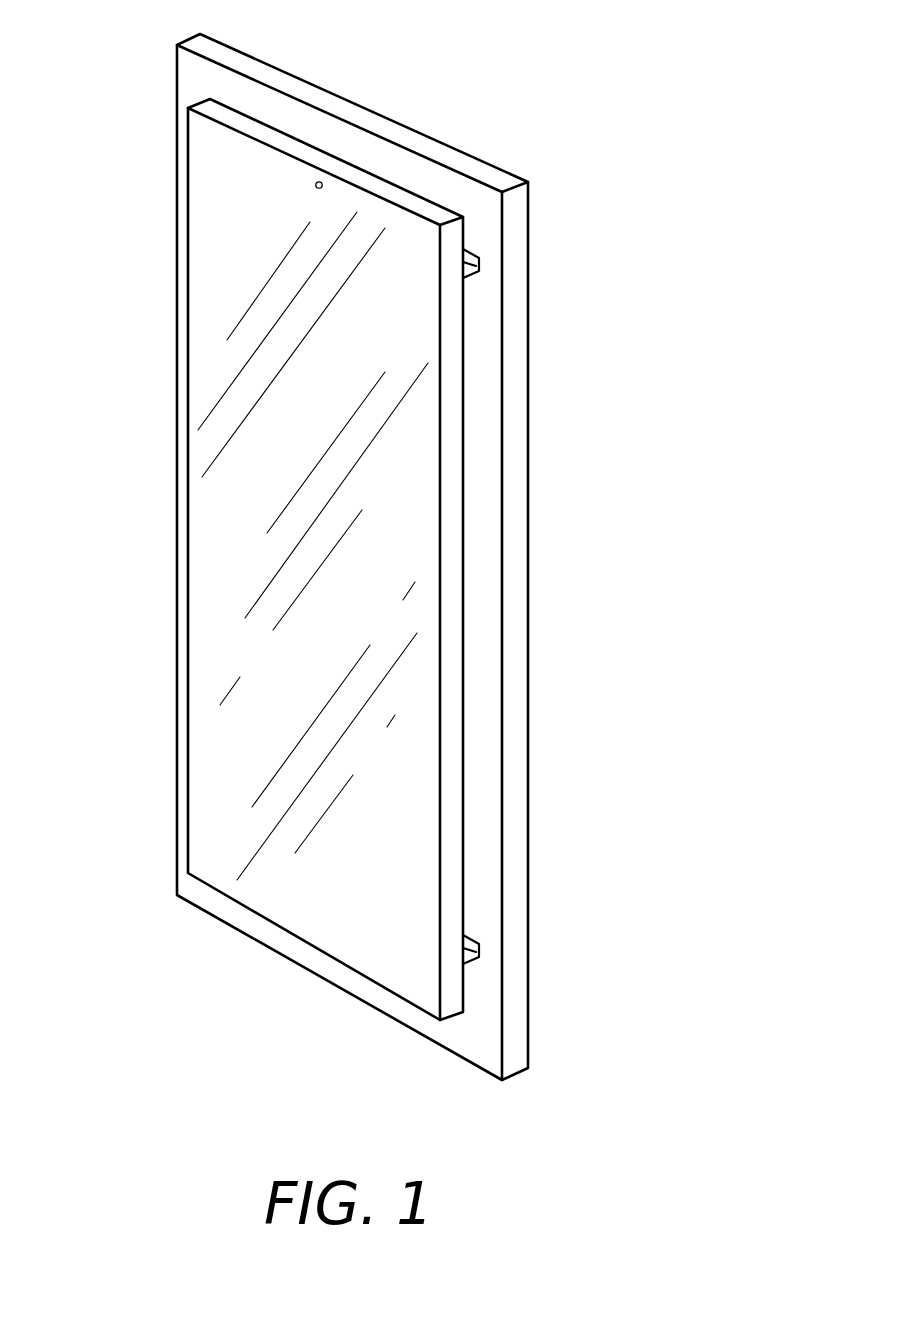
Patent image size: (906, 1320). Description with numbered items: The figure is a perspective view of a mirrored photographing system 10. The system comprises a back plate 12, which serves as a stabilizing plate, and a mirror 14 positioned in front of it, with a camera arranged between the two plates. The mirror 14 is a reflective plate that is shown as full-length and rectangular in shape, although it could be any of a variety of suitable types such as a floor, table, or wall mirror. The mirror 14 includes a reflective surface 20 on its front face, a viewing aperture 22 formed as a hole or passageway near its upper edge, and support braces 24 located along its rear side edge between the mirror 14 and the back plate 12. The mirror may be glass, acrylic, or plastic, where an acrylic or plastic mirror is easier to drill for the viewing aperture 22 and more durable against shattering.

The mirrored photographing system 10 is at (648, 157).
The back plate 12 is at (530, 352).
The mirror 14 is at (463, 488).
The reflective surface 20 is at (232, 315).
The viewing aperture 22 is at (322, 181).
The support braces 24 is at (478, 262).